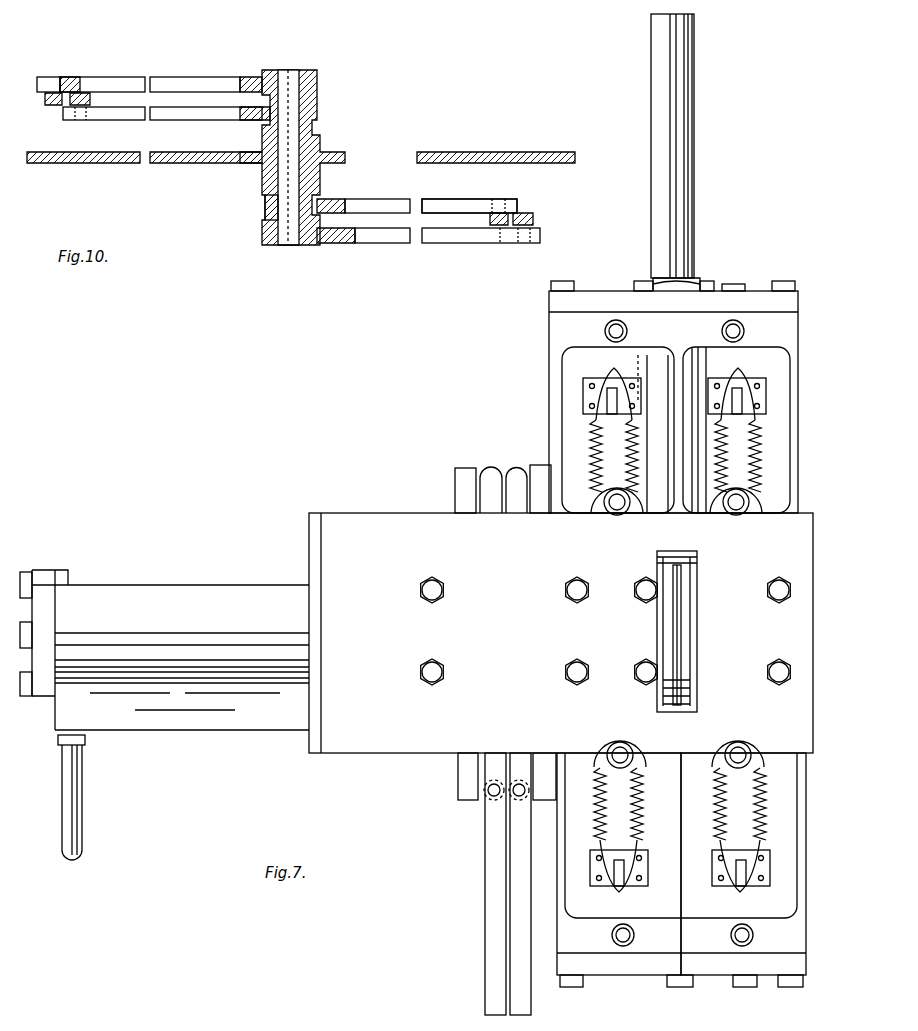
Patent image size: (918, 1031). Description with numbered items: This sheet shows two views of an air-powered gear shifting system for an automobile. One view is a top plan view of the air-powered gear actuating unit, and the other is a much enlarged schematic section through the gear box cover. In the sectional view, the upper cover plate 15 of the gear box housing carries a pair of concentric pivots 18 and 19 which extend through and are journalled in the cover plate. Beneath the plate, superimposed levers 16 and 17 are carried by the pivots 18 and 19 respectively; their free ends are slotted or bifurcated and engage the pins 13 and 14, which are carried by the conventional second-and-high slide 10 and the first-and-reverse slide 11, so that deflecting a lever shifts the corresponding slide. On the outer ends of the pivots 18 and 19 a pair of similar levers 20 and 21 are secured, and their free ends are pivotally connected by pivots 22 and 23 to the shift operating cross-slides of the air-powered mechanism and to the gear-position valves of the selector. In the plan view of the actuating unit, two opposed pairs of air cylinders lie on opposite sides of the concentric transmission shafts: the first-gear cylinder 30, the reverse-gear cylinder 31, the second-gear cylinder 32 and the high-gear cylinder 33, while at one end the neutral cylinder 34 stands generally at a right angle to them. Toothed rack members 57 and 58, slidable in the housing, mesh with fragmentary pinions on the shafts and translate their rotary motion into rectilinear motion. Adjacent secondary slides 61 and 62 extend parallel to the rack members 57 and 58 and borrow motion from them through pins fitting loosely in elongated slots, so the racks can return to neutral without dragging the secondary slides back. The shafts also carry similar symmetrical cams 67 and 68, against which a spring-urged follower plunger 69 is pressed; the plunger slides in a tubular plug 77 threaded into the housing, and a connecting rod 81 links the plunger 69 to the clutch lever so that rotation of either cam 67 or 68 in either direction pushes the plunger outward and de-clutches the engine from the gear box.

In FIG. 10, the "2nd" and "high" slide 10 is at (488, 218).
In FIG. 10, the "1st" and "reverse" slide 11 is at (533, 219).
In FIG. 10, the pin 13 is at (500, 243).
In FIG. 10, the pin 14 is at (520, 215).
In FIG. 10, the upper cover plate 15 is at (365, 152).
In FIG. 10, the lever 16 is at (380, 199).
In FIG. 10, the lever 17 is at (378, 243).
In FIG. 10, the concentric pivot 18 is at (265, 208).
In FIG. 10, the concentric pivot 19 is at (285, 245).
In FIG. 10, the lever 20 is at (168, 120).
In FIG. 10, the lever 21 is at (182, 77).
In FIG. 10, the pivot 22 is at (72, 120).
In FIG. 10, the pivot 23 is at (52, 77).
In FIG. 7, the "1st gear" cylinder 30 is at (765, 300).
In FIG. 7, the "reverse-gear" cylinder 31 is at (763, 945).
In FIG. 7, the "2nd-gear" cylinder 32 is at (604, 945).
In FIG. 7, the "high-gear" cylinder 33 is at (573, 365).
In FIG. 7, the "neutral" cylinder 34 is at (163, 610).
In FIG. 7, the toothed rack member 57 is at (455, 487).
In FIG. 7, the toothed rack member 58 is at (540, 465).
In FIG. 7, the secondary slide 61 is at (491, 478).
In FIG. 7, the secondary slide 62 is at (516, 478).
In FIG. 7, the cam 67 is at (686, 592).
In FIG. 7, the cam 68 is at (667, 622).
In FIG. 7, the follower plunger 69 is at (700, 280).
In FIG. 7, the tubular plug 77 is at (640, 281).
In FIG. 7, the connecting rod 81 is at (684, 183).